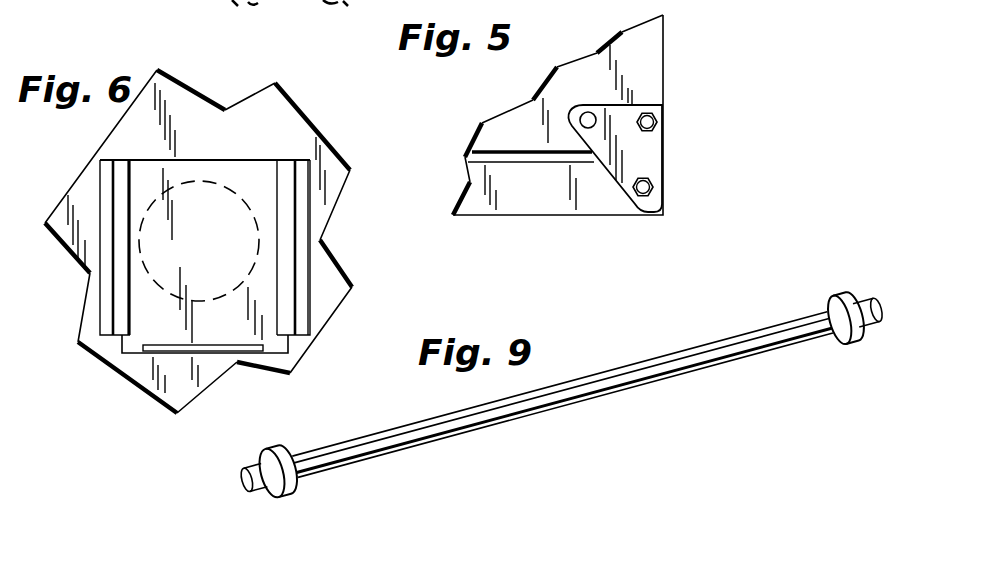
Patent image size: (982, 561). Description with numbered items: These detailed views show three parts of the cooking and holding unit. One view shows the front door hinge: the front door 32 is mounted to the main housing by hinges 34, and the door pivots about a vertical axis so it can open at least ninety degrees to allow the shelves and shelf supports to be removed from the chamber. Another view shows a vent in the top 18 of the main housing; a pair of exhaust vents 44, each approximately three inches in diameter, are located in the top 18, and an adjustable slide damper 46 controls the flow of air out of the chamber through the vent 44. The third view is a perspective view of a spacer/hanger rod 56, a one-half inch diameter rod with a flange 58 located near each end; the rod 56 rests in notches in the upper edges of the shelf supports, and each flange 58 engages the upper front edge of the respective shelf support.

In FIG. 5, the top 18 is at (643, 53).
In FIG. 5, the front door 32 is at (550, 203).
In FIG. 5, the hinge 34 is at (652, 145).
In FIG. 6, the exhaust vent 44 is at (197, 173).
In FIG. 6, the adjustable slide damper 46 is at (133, 343).
In FIG. 9, the spacer/hanger rod 56 is at (590, 388).
In FIG. 9, the flange 58 is at (292, 490).